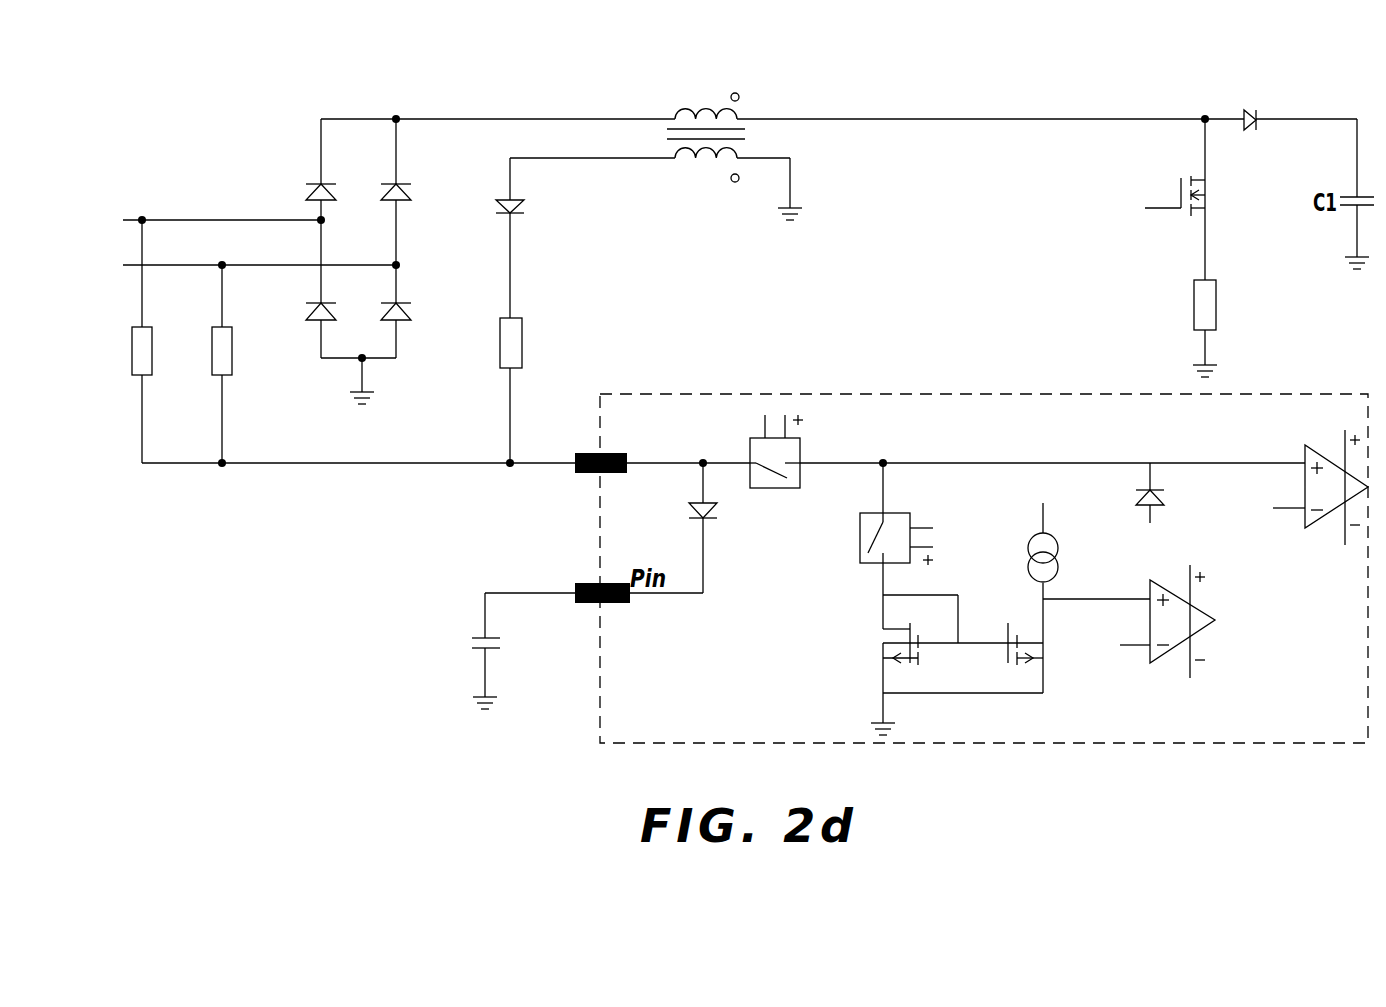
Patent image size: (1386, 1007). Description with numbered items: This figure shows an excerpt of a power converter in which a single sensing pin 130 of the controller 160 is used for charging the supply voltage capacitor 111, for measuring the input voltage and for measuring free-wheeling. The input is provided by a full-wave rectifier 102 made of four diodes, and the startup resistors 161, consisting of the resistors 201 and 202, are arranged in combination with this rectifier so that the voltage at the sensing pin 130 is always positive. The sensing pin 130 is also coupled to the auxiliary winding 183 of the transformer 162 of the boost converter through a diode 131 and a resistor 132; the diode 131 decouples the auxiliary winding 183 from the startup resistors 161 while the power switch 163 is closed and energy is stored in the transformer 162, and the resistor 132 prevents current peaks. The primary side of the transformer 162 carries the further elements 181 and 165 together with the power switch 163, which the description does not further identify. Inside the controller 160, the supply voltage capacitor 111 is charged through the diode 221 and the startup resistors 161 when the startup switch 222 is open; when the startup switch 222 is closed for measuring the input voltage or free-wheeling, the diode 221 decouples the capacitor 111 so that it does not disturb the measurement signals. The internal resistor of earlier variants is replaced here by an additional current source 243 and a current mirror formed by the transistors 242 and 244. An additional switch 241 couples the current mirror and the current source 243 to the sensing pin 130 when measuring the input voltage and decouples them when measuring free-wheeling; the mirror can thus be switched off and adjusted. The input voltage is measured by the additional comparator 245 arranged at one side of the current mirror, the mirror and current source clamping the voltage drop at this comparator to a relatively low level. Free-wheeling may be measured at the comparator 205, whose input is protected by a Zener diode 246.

The rectifier 102 is at (196, 130).
The resistor R1 201 is at (155, 360).
The resistor R2 202 is at (235, 360).
The startup resistors 161 is at (180, 467).
The diode 131 is at (497, 210).
The resistor 132 is at (523, 352).
The transformer 162 is at (675, 113).
The primary winding terminal P1 181 is at (727, 93).
The auxiliary winding 183 is at (688, 163).
The power switch 163 is at (1170, 185).
The diode D1 165 is at (1260, 125).
The sensing pin 130 is at (570, 468).
The controller 160 is at (940, 393).
The diode 221 is at (687, 513).
The startup switch 222 is at (745, 448).
The additional switch 241 is at (855, 545).
The transistor 242 is at (868, 638).
The additional current source 243 is at (1013, 573).
The transistor 244 is at (1038, 633).
The additional comparator 245 is at (1172, 655).
The comparator 205 is at (1325, 521).
The Zener diode 246 is at (1135, 478).
The supply voltage capacitor 111 is at (465, 645).